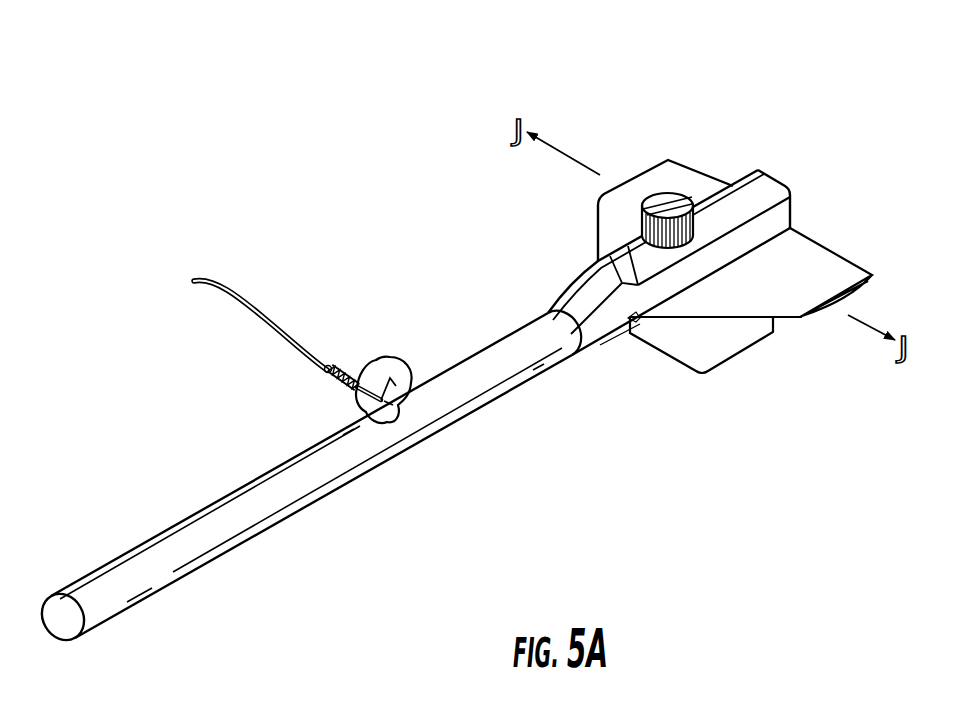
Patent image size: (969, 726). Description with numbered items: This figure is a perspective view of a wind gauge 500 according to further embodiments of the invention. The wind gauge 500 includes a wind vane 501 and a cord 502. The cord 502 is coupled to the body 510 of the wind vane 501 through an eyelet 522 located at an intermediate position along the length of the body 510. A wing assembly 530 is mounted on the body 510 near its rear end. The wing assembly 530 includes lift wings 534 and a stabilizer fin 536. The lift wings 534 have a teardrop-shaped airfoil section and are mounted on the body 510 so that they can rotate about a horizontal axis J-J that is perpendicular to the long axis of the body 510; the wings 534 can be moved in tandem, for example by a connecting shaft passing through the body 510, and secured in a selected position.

The wind gauge 500 is at (657, 487).
The wind vane 501 is at (473, 287).
The cord 502 is at (223, 292).
The body 510 is at (323, 490).
The eyelet 522 is at (388, 357).
The wing assembly 530 is at (715, 257).
The lift wings 534 is at (670, 173).
The stabilizer fin 536 is at (720, 353).